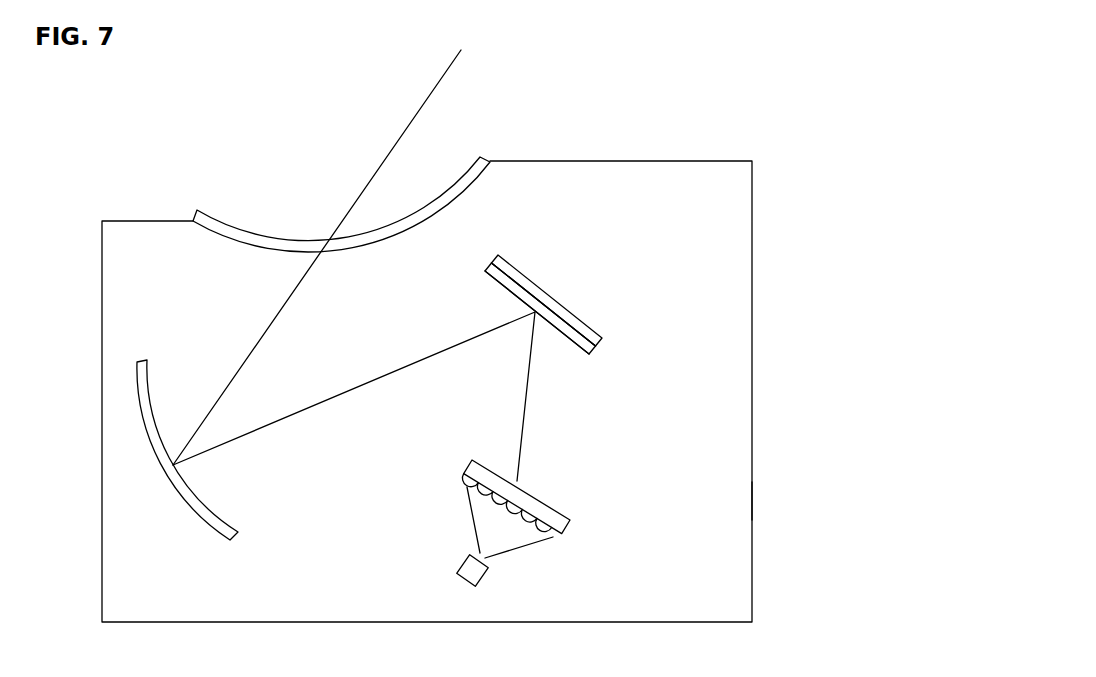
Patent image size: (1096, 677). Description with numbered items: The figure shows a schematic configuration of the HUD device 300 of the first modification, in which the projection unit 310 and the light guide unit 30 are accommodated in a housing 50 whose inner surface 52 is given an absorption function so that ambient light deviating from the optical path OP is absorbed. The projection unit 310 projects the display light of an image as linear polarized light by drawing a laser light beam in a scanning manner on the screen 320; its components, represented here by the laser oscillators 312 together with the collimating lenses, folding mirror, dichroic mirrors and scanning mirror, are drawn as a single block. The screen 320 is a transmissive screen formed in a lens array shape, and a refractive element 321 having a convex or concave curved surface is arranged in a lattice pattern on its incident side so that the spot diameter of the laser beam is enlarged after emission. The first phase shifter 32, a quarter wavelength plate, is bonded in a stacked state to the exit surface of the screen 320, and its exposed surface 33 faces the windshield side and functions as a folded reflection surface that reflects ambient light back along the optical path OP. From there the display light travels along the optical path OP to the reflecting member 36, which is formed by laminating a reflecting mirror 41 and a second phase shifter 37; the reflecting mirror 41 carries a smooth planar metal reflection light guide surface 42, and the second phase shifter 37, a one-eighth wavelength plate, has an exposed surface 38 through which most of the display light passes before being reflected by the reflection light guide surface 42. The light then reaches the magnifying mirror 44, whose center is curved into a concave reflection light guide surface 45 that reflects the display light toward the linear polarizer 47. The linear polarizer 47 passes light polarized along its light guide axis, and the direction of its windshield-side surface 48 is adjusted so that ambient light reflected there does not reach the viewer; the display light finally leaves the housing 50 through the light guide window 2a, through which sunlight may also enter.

The HUD device 300 is at (710, 97).
The light guide unit 30 is at (212, 138).
The housing 50 is at (753, 293).
The inner surface 52 is at (741, 498).
The optical path OP is at (264, 334).
The linear polarizer 47 is at (462, 174).
The surface 48 is at (276, 238).
The light guide window 2a is at (215, 214).
The magnifying mirror 44 is at (235, 536).
The reflection light guide surface 45 is at (212, 517).
The reflecting member 36 is at (668, 337).
The reflecting mirror 41 is at (602, 341).
The second phase shifter 37 is at (593, 354).
The reflection light guide surface 42 is at (515, 283).
The exposed surface 38 is at (566, 337).
The projection unit 310 is at (463, 477).
The exposed surface 33 is at (545, 504).
The first phase shifter 32 is at (567, 523).
The refractive element 321 is at (463, 488).
The screen 320 is at (557, 538).
The laser oscillators 312 is at (485, 572).